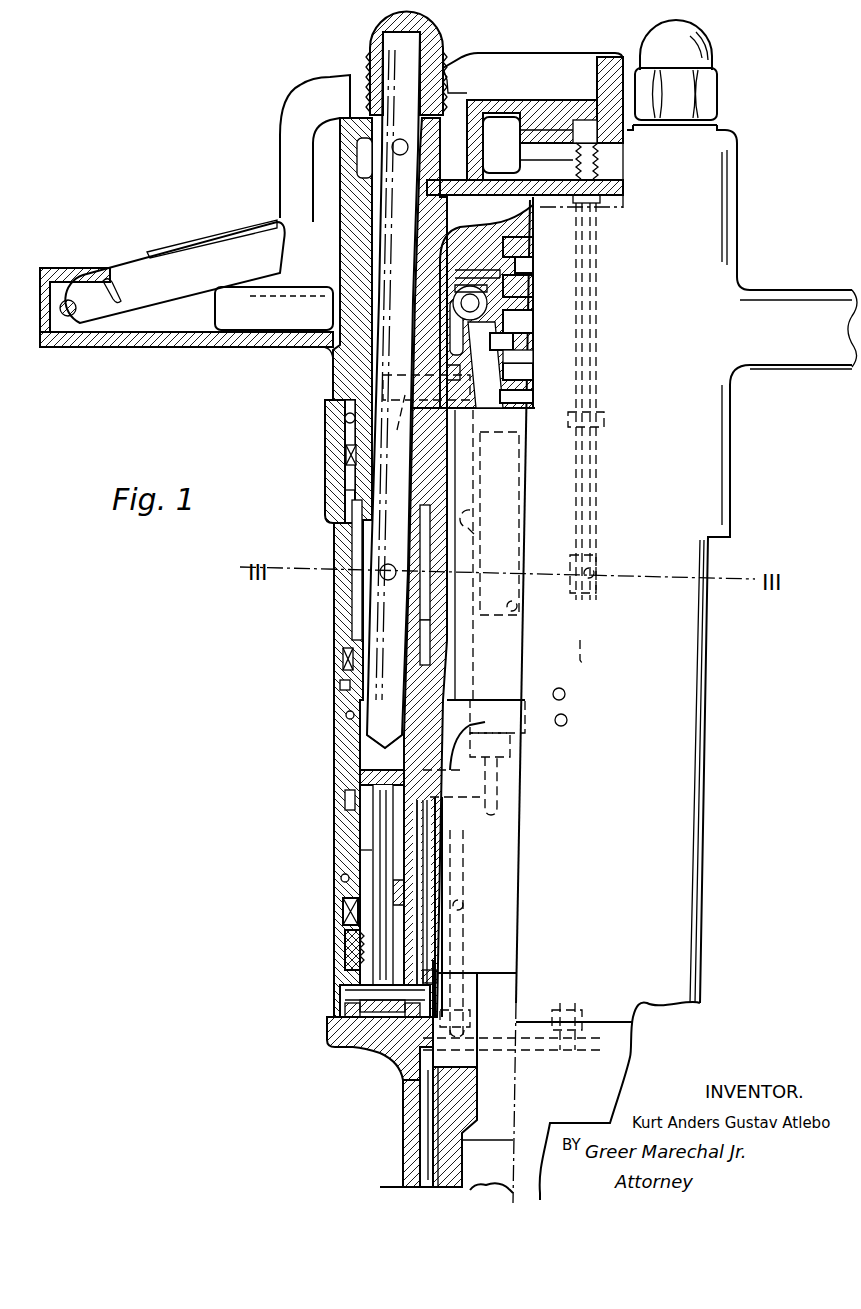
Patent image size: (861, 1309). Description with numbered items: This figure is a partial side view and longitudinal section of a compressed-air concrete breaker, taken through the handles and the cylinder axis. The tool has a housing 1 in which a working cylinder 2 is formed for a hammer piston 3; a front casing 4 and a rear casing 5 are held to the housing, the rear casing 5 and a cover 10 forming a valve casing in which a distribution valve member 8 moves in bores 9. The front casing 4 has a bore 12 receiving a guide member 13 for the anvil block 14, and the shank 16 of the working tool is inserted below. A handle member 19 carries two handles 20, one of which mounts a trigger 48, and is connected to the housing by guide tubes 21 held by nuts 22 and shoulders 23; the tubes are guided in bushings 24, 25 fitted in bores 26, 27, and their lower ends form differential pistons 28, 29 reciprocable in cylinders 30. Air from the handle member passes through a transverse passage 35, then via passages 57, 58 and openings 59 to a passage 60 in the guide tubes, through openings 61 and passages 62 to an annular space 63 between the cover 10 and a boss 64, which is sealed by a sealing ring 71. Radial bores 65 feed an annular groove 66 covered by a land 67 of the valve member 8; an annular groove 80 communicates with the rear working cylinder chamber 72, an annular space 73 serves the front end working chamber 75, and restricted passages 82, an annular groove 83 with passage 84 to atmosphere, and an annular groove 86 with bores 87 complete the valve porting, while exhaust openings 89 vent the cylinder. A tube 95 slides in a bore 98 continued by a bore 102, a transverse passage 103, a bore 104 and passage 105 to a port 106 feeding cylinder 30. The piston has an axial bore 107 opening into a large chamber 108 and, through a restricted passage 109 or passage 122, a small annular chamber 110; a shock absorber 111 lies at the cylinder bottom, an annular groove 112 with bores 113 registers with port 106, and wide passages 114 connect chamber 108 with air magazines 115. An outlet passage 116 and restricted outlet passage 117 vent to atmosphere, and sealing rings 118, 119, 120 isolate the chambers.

The housing 1 is at (703, 710).
The working cylinder 2 is at (442, 685).
The hammer piston 3 is at (480, 705).
The front casing 4 is at (403, 1103).
The rear casing 5 is at (527, 400).
The distribution valve member 8 is at (515, 243).
The bores 9 is at (520, 265).
The cover 10 is at (486, 243).
The bore 12 is at (427, 1123).
The guide member 13 is at (443, 1163).
The anvil block 14 is at (500, 1097).
The shank 16 is at (500, 1180).
The handle member 19 is at (722, 460).
The handles 20 is at (770, 366).
The guide tubes 21 is at (333, 292).
The nuts 22 is at (364, 67).
The shoulders 23 is at (362, 197).
The bushing 24 is at (356, 450).
The bushing 25 is at (350, 735).
The bore 26 is at (350, 422).
The bore 27 is at (350, 717).
The differential piston 28 is at (360, 853).
The differential piston 29 is at (343, 932).
The cylinders 30 is at (345, 882).
The transverse passage 35 is at (550, 100).
The trigger 48 is at (195, 250).
The passage 57 is at (528, 145).
The passage 58 is at (543, 173).
The openings 59 is at (425, 170).
The passage 60 is at (428, 196).
The openings 61 is at (362, 602).
The passages 62 is at (470, 516).
The annular space 63 is at (480, 328).
The boss 64 is at (450, 372).
The radial bores 65 is at (476, 313).
The annular groove 66 is at (467, 300).
The land 67 is at (518, 320).
The sealing ring 71 is at (460, 285).
The rear working cylinder chamber 72 is at (512, 432).
The annular space 73 is at (460, 272).
The front end working chamber 75 is at (397, 1043).
The annular groove 80 is at (513, 340).
The restricted passages 82 is at (505, 303).
The annular groove 83 is at (510, 352).
The passage 84 is at (394, 426).
The annular groove 86 is at (490, 260).
The bores 87 is at (498, 283).
The exhaust openings 89 is at (566, 718).
The tube 95 is at (598, 292).
The bore 98 is at (595, 573).
The bore 102 is at (587, 653).
The transverse passage 103 is at (580, 1055).
The bore 104 is at (464, 902).
The passage 105 is at (462, 752).
The port 106 is at (447, 760).
The axial bore 107 is at (383, 807).
The chamber 108 is at (350, 977).
The restricted passage 109 is at (405, 893).
The annular chamber 110 is at (413, 862).
The shock absorber 111 is at (357, 1017).
The annular groove 112 is at (360, 763).
The bores 113 is at (384, 733).
The passages 114 is at (430, 953).
The air magazines 115 is at (517, 606).
The outlet passage 116 is at (355, 685).
The restricted outlet passage 117 is at (345, 692).
The sealing ring 118 is at (428, 660).
The sealing ring 119 is at (350, 800).
The sealing ring 120 is at (343, 917).
The passage 122 is at (442, 827).